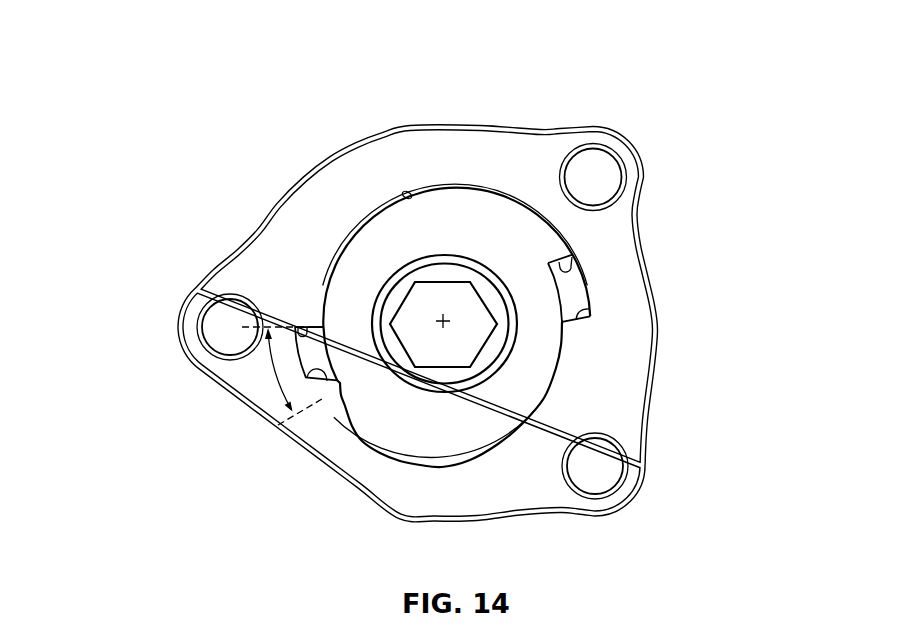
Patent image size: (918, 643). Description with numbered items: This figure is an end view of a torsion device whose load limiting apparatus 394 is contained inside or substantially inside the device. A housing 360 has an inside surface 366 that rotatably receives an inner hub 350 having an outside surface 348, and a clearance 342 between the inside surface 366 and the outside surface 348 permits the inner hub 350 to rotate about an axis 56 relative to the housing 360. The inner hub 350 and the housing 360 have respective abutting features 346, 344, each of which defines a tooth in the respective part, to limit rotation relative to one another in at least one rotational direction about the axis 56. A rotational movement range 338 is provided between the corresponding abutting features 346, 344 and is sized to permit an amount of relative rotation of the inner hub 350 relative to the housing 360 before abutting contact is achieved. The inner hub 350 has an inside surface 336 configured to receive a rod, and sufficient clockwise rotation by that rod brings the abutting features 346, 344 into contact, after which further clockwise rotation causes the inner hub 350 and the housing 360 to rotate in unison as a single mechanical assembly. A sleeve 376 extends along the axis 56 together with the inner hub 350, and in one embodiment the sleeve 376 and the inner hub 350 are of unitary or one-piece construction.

The load limiting apparatus 394 is at (458, 282).
The housing 360 is at (584, 126).
The rotational movement range 338 is at (218, 376).
The outside surface 348 is at (489, 190).
The sleeve 376 is at (390, 366).
The clearance 342 is at (452, 189).
The inner hub 350 is at (550, 354).
The inside surface 366 is at (407, 195).
The abutting feature 344 is at (320, 379).
The abutting feature 346 is at (298, 329).
The inside surface 336 is at (396, 319).
The axis 56 is at (447, 327).